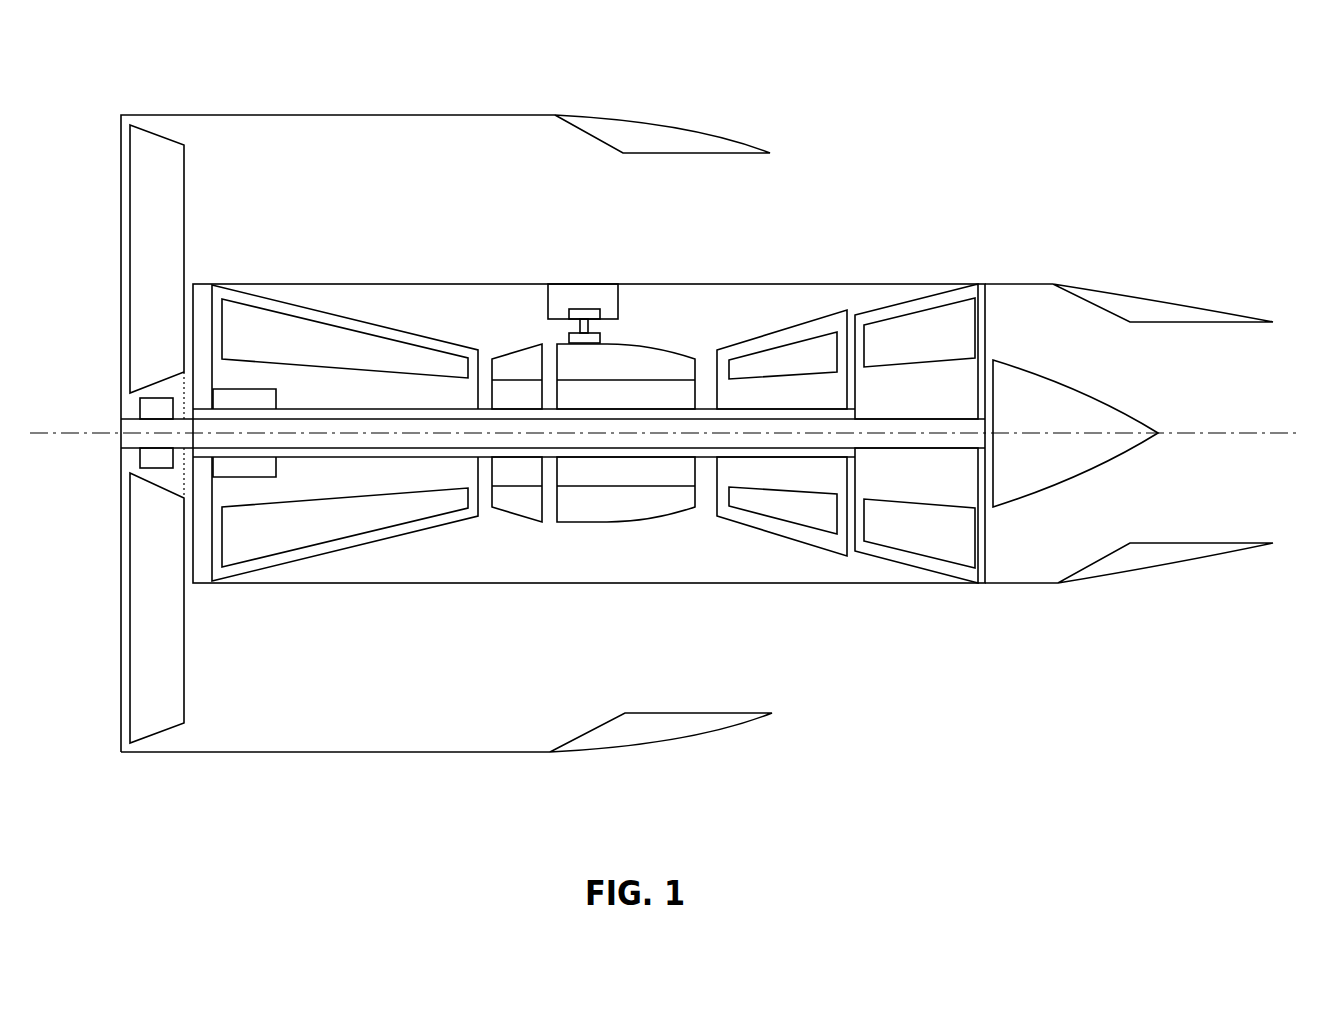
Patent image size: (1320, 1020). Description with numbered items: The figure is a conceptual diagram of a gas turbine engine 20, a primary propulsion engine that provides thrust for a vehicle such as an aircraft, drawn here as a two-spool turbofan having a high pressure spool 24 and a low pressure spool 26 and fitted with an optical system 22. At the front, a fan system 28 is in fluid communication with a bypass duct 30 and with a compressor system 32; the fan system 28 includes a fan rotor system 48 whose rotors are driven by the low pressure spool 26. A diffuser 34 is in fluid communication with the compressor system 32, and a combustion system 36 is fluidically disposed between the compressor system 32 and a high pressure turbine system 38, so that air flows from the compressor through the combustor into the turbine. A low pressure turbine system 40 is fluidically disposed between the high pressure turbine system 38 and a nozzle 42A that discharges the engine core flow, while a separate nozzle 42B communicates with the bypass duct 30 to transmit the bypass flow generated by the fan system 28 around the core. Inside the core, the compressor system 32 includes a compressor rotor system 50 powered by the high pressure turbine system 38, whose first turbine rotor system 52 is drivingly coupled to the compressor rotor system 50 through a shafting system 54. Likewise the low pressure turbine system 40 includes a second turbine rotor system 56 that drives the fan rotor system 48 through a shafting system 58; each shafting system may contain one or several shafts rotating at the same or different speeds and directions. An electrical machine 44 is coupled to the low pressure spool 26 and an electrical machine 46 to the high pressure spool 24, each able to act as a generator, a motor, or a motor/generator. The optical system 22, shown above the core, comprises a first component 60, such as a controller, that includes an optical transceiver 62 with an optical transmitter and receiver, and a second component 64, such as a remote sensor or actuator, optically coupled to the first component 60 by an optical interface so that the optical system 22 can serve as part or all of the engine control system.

The gas turbine engine 20 is at (1142, 93).
The optical system 22 is at (603, 272).
The high pressure spool 24 is at (755, 220).
The low pressure spool 26 is at (895, 198).
The fan system 28 is at (120, 585).
The bypass duct 30 is at (308, 725).
The compressor system 32 is at (418, 533).
The diffuser 34 is at (518, 348).
The combustion system 36 is at (618, 340).
The high pressure turbine system 38 is at (777, 535).
The low pressure turbine system 40 is at (898, 583).
The nozzle 42A is at (1217, 562).
The nozzle 42B is at (687, 740).
The electrical machine 44 is at (140, 410).
The electrical machine 46 is at (277, 463).
The fan rotor system 48 is at (155, 735).
The compressor rotor system 50 is at (388, 337).
The first turbine rotor system 52 is at (808, 330).
The shafting system 54 is at (710, 460).
The second turbine rotor system 56 is at (905, 315).
The shafting system 58 is at (873, 450).
The first component 60 is at (552, 290).
The optical transceiver 62 is at (585, 307).
The second component 64 is at (595, 339).